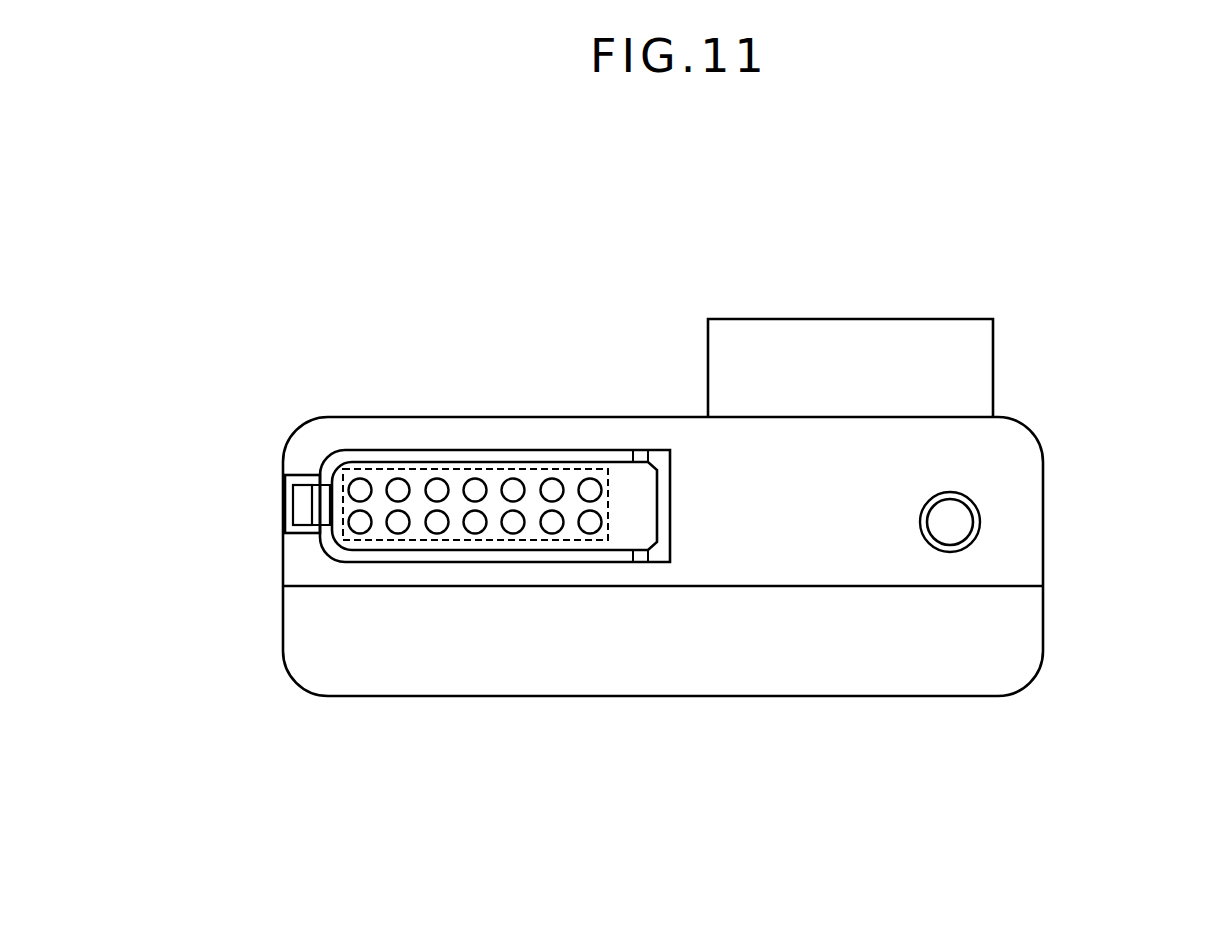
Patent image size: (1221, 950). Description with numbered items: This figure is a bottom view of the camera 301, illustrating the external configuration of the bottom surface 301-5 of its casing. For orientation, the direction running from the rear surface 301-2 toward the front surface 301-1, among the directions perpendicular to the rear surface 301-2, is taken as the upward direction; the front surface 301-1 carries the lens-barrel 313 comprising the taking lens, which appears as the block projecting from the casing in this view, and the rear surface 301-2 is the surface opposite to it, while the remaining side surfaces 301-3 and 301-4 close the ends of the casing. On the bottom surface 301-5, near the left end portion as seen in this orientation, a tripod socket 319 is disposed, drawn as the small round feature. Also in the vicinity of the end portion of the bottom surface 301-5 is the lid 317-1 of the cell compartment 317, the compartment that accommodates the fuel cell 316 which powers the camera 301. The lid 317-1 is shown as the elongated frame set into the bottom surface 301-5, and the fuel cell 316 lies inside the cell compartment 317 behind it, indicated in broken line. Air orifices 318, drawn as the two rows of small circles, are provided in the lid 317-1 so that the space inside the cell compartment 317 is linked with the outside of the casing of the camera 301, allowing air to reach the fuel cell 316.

The camera 301 is at (432, 737).
The front surface 301-1 is at (673, 417).
The rear surface 301-2 is at (520, 696).
The right side surface of body 301-3 is at (1043, 553).
The left side surface of body 301-4 is at (283, 562).
The bottom surface 301-5 is at (760, 560).
The lens-barrel 313 is at (987, 343).
The fuel cell 316 is at (463, 470).
The cell compartment 317 is at (567, 452).
The lid 317-1 is at (385, 465).
The air orifices 318 is at (357, 484).
The tripod socket 319 is at (957, 517).